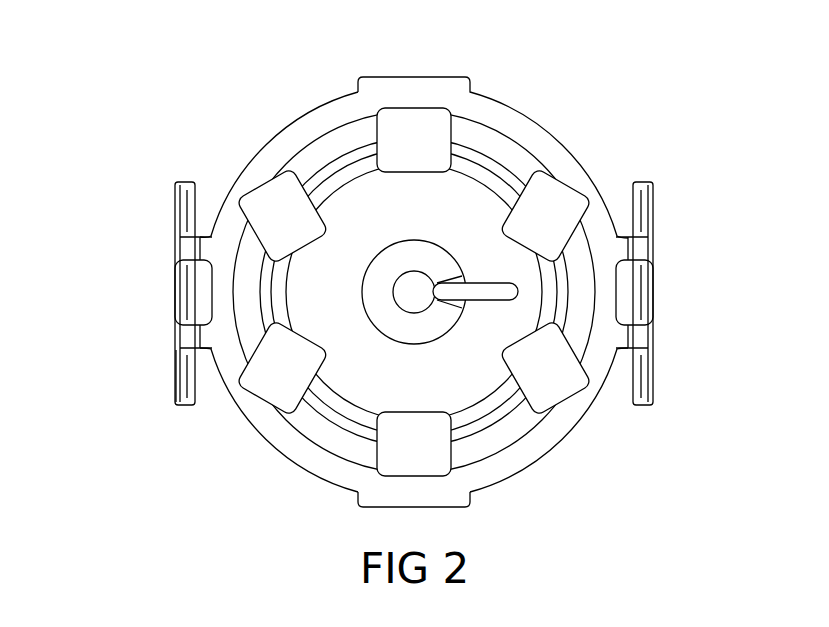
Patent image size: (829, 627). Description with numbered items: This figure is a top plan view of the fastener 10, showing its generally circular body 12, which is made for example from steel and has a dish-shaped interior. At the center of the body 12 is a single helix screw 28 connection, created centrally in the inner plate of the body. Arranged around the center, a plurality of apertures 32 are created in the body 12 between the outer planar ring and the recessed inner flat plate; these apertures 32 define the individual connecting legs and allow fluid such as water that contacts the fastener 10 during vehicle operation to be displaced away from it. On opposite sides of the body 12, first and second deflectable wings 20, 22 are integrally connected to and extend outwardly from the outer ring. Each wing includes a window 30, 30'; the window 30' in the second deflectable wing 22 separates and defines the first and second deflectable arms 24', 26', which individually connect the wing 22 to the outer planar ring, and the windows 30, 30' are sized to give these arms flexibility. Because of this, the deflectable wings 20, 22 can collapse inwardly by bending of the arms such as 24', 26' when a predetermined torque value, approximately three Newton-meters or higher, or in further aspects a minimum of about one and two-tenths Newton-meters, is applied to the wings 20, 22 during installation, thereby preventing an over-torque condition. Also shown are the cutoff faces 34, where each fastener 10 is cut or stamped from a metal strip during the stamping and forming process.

The fastener 10 is at (676, 117).
The body 12 is at (490, 500).
The first deflectable wing 20 is at (678, 293).
The second deflectable wing 22 is at (156, 291).
The first deflectable arm 24' is at (150, 363).
The second deflectable arm 26' is at (150, 253).
The single helix screw connection 28 is at (475, 283).
The window 30 is at (669, 292).
The window 30' is at (156, 292).
The apertures 32 is at (387, 135).
The cutoff faces 34 is at (387, 500).